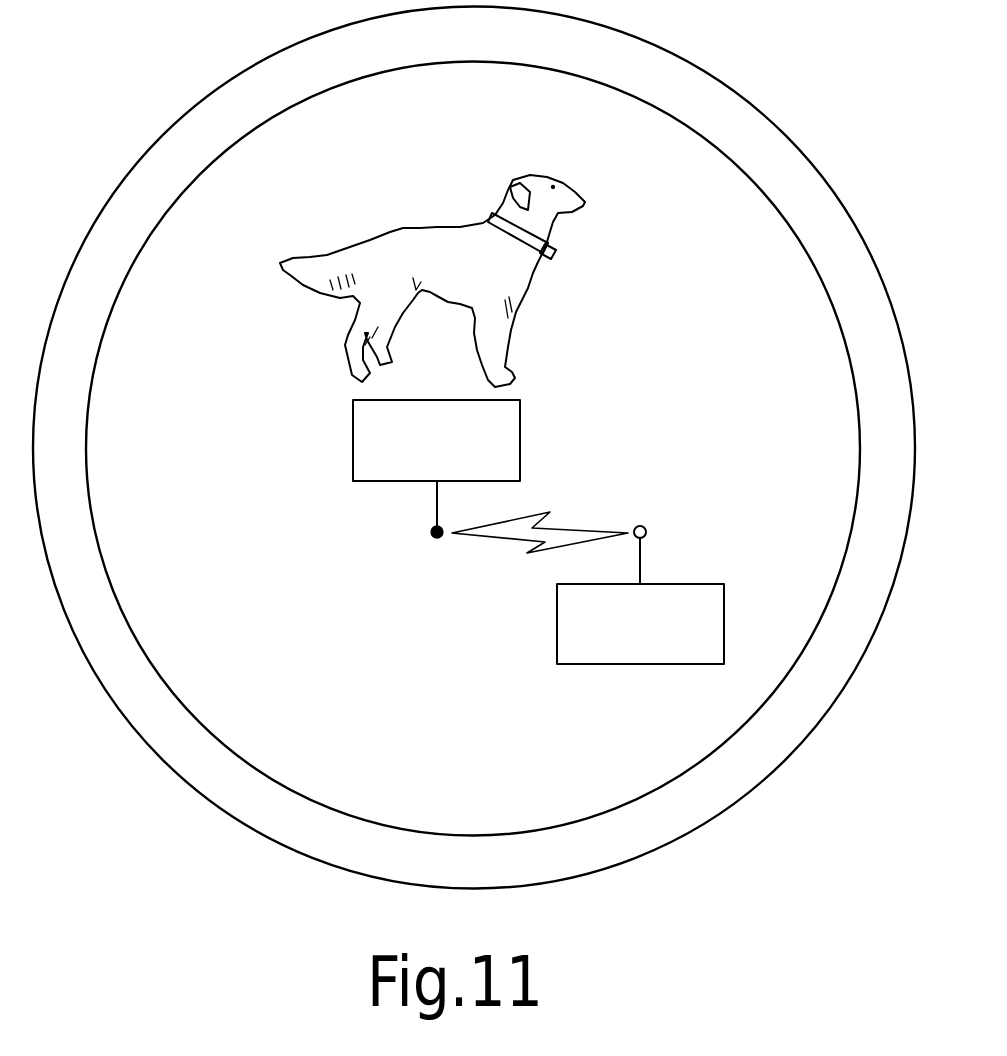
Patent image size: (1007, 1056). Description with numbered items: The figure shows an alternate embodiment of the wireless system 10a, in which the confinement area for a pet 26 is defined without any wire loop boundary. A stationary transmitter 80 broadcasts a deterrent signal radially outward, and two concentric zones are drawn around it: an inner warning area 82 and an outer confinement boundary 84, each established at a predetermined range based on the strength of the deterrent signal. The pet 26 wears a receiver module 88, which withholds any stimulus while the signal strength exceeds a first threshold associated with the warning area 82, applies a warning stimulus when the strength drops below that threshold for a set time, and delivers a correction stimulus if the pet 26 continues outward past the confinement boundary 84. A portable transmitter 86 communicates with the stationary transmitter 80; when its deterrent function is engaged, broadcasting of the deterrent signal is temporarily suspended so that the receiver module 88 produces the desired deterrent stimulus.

The wireless system 10a is at (178, 832).
The pet 26 is at (447, 229).
The stationary transmitter 80 is at (520, 437).
The warning area 82 is at (745, 172).
The confinement boundary 84 is at (697, 69).
The portable transmitter 86 is at (724, 622).
The receiver module 88 is at (556, 250).